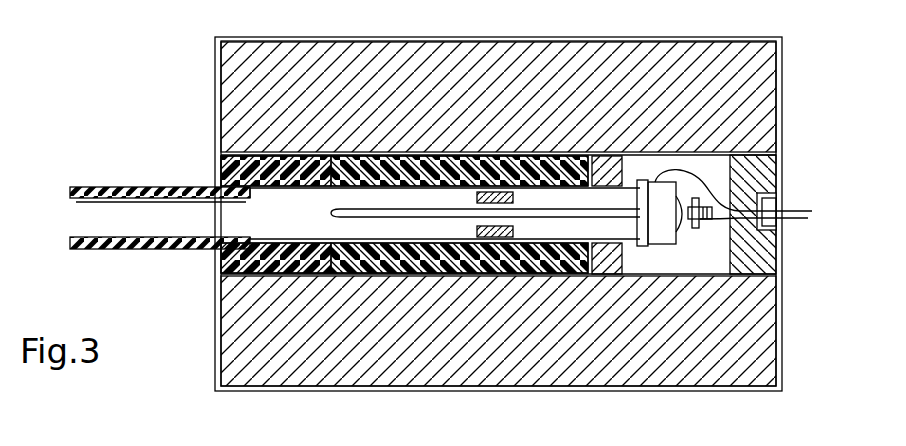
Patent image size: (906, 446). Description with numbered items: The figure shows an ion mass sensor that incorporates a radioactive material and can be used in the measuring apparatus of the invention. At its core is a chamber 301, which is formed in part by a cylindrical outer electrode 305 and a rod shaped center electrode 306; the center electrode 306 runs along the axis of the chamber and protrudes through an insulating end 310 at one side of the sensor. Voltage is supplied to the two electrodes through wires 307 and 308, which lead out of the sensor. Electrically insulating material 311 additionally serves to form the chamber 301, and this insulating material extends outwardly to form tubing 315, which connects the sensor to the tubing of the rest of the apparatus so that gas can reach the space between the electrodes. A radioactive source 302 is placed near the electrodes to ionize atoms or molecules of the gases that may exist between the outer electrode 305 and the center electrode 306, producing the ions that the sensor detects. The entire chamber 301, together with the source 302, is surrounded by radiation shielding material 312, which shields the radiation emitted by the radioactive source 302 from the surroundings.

The radiation shielding material 312 is at (328, 55).
The radioactive source 302 is at (490, 192).
The electrically insulating material 311 is at (235, 181).
The chamber 301 is at (262, 220).
The rod shaped center electrode 306 is at (333, 212).
The tubing 315 is at (140, 249).
The cylindrical outer electrode 305 is at (228, 262).
The insulating end 310 is at (665, 236).
The wire 307 is at (797, 211).
The wire 308 is at (800, 218).